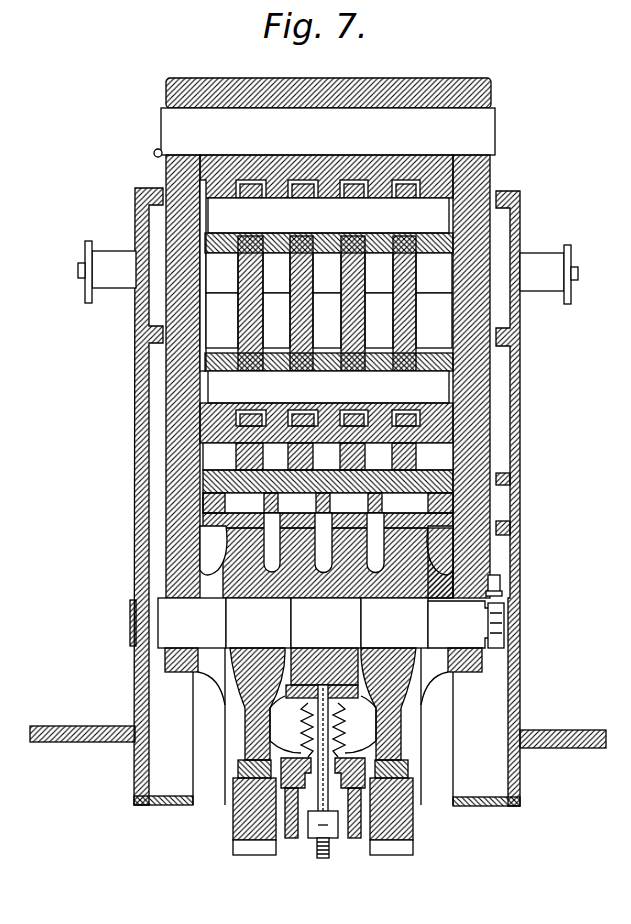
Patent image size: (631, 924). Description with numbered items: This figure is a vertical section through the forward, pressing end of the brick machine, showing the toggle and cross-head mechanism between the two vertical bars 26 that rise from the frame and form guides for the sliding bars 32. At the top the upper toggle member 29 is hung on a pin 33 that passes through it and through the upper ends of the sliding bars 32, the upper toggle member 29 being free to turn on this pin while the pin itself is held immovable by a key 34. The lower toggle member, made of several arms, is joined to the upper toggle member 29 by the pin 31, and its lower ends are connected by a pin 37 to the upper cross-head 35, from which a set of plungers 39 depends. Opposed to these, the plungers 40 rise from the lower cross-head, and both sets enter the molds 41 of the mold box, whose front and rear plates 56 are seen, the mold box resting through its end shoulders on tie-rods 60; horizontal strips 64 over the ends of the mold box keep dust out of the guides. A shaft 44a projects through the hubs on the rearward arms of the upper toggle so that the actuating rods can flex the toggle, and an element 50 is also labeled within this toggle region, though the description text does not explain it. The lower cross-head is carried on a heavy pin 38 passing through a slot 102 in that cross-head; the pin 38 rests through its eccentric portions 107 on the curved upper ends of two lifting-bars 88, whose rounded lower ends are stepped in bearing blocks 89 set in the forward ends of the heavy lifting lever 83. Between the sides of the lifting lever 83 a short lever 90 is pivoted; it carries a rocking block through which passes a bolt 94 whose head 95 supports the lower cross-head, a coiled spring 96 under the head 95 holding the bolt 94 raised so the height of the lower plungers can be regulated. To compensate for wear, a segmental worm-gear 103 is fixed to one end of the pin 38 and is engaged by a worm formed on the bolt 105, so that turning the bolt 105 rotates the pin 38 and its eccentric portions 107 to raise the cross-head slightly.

The vertical bars 26 is at (512, 356).
The upper toggle member 29 is at (386, 82).
The pin 31 is at (366, 200).
The sliding bars 32 is at (172, 380).
The pin 33 is at (488, 126).
The key 34 is at (147, 143).
The upper cross-head 35 is at (428, 420).
The pin 37 is at (328, 386).
The pin 38 is at (165, 615).
The plungers 39 is at (215, 440).
The plungers 40 is at (228, 532).
The molds 41 is at (190, 668).
The shaft 44a is at (98, 258).
The column 50 is at (282, 262).
The front and rear plates 56 is at (428, 574).
The tie-rods 60 is at (192, 488).
The horizontal strips 64 is at (205, 455).
The lifting lever 83 is at (245, 825).
The lifting-bars 88 is at (250, 732).
The bearing blocks 89 is at (240, 763).
The short lever 90 is at (283, 832).
The bolt 94 is at (315, 850).
The head 95 is at (265, 687).
The coiled spring 96 is at (440, 672).
The slot 102 is at (313, 655).
The segmental worm-gear 103 is at (486, 638).
The bolt 105 is at (488, 594).
The eccentric portions 107 is at (218, 640).